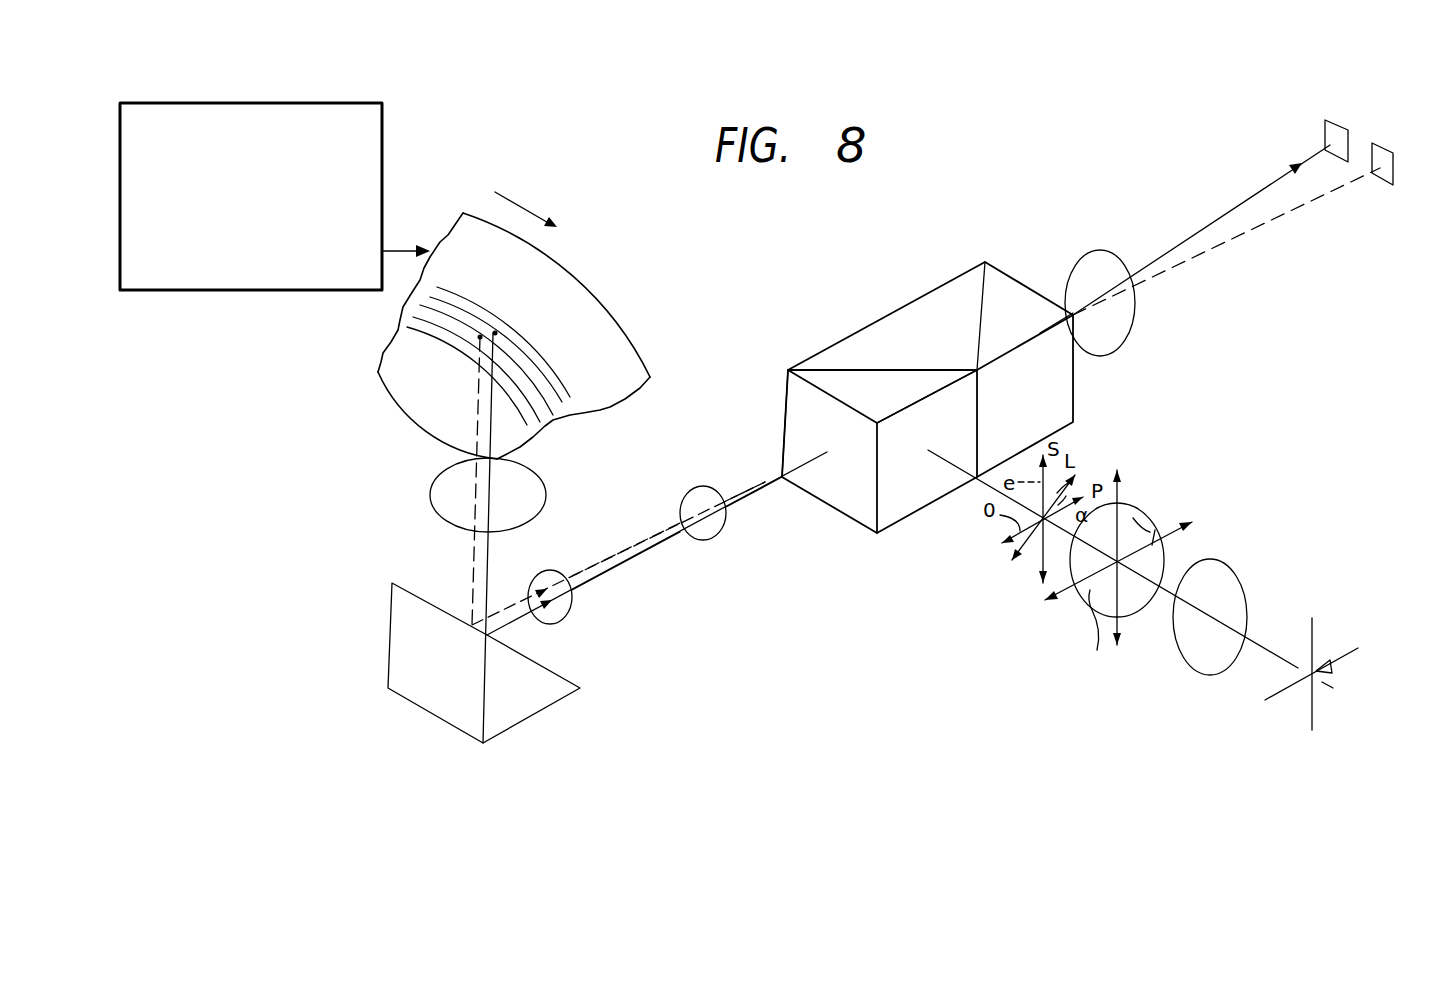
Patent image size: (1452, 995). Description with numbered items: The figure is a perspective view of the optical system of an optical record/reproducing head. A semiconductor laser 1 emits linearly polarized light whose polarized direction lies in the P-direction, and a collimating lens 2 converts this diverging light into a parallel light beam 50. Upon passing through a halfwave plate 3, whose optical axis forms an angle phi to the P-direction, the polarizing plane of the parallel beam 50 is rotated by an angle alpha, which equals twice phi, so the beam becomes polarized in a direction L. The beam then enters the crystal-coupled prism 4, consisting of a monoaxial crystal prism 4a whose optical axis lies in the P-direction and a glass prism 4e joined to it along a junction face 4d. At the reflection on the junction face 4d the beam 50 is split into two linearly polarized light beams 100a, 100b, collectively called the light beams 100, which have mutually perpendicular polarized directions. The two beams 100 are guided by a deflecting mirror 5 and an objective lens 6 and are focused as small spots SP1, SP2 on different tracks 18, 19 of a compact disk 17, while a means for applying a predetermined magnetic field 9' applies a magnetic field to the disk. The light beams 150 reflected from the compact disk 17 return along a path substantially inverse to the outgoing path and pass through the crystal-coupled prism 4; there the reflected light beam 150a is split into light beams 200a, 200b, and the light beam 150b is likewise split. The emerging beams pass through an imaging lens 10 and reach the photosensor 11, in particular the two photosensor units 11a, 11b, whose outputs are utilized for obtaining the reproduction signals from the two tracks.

The means for applying a predetermined magnetic field 9' is at (275, 181).
The compact disk 17 is at (583, 297).
The track 18 is at (520, 372).
The track 19 is at (550, 383).
The small spot SP1 is at (480, 337).
The small spot SP2 is at (495, 333).
The objective lens 6 is at (450, 484).
The deflecting mirror 5 is at (550, 692).
The reflected light beams 150 is at (566, 612).
The light beam 150a is at (657, 545).
The light beam 150b is at (610, 557).
The light beams 100 is at (716, 525).
The light beam 100a is at (760, 490).
The light beam 100b is at (742, 495).
The crystal-coupled prism 4 is at (916, 368).
The monoaxial crystal prism 4a is at (812, 378).
The junction face 4d is at (940, 370).
The glass prism 4e is at (966, 298).
The parallel light beam 50 is at (928, 452).
The imaging lens 10 is at (1084, 258).
The photosensor 11 is at (1383, 118).
The photosensor unit 11a is at (1333, 130).
The photosensor unit 11b is at (1409, 151).
The light beam 200a is at (1305, 163).
The light beam 200b is at (1277, 217).
The halfwave plate 3 is at (1145, 510).
The collimating lens 2 is at (1220, 560).
The semiconductor laser 1 is at (1340, 662).